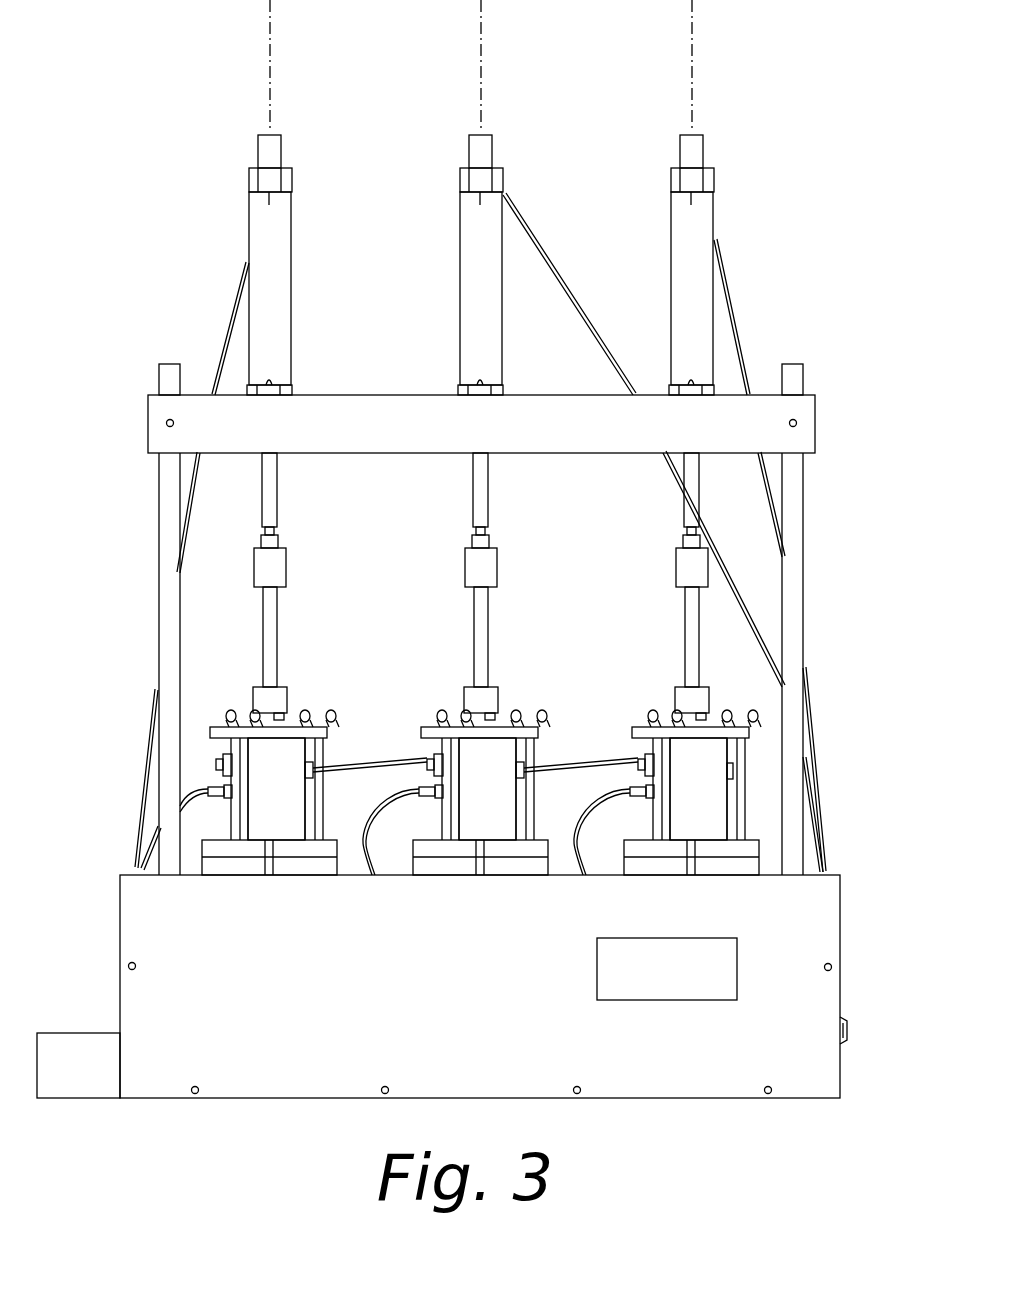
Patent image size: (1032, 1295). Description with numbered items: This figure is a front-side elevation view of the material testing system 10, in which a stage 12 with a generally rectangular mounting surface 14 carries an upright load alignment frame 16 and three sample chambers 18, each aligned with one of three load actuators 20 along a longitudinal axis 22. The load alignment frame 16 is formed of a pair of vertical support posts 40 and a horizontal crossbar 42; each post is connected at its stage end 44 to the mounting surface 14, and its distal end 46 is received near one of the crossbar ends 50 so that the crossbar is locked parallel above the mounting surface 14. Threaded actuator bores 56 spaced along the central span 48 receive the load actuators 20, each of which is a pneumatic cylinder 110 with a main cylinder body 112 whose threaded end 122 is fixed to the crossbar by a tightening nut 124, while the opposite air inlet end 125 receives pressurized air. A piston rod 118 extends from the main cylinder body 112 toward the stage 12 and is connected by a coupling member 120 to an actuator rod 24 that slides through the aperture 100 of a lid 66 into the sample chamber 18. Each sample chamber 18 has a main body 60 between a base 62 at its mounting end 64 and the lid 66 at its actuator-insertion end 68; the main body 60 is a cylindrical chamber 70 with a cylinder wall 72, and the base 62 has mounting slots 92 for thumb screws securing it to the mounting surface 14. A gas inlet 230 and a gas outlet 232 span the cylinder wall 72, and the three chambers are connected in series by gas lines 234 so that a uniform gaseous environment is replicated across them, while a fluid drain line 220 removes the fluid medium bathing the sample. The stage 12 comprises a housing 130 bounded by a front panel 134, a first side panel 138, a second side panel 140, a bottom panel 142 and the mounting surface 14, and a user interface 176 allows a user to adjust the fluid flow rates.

The material testing system 10 is at (812, 247).
The stage 12 is at (860, 885).
The mounting surface 14 is at (603, 858).
The load alignment frame 16 is at (128, 408).
The sample chamber 18 is at (352, 676).
The load actuator 20 is at (318, 178).
The longitudinal axis 22 is at (276, 37).
The actuator rod 24 is at (278, 618).
The vertical support post 40 is at (792, 515).
The horizontal crossbar 42 is at (413, 420).
The stage end 44 is at (170, 860).
The distal end 46 is at (172, 364).
The central span 48 is at (592, 395).
The crossbar end 50 is at (815, 412).
The threaded actuator bore 56 is at (292, 395).
The main body 60 is at (290, 830).
The base 62 is at (318, 862).
The mounting end 64 is at (225, 877).
The lid 66 is at (224, 727).
The actuator-insertion end 68 is at (284, 688).
The cylindrical chamber 70 is at (264, 770).
The cylinder wall 72 is at (310, 823).
The mounting slot 92 is at (267, 862).
The aperture 100 is at (262, 690).
The pneumatic cylinder 110 is at (292, 262).
The main cylinder body 112 is at (272, 238).
The piston rod 118 is at (277, 487).
The coupling member 120 is at (285, 566).
The threaded end 122 is at (271, 384).
The tightening nut 124 is at (292, 385).
The air inlet end 125 is at (268, 203).
The housing 130 is at (848, 995).
The front panel 134 is at (264, 998).
The first side panel 138 is at (120, 965).
The second side panel 140 is at (840, 930).
The bottom panel 142 is at (300, 1100).
The user interface 176 is at (660, 968).
The fluid drain line 220 is at (620, 822).
The gas inlet 230 is at (428, 760).
The gas outlet 232 is at (313, 770).
The gas line 234 is at (348, 783).